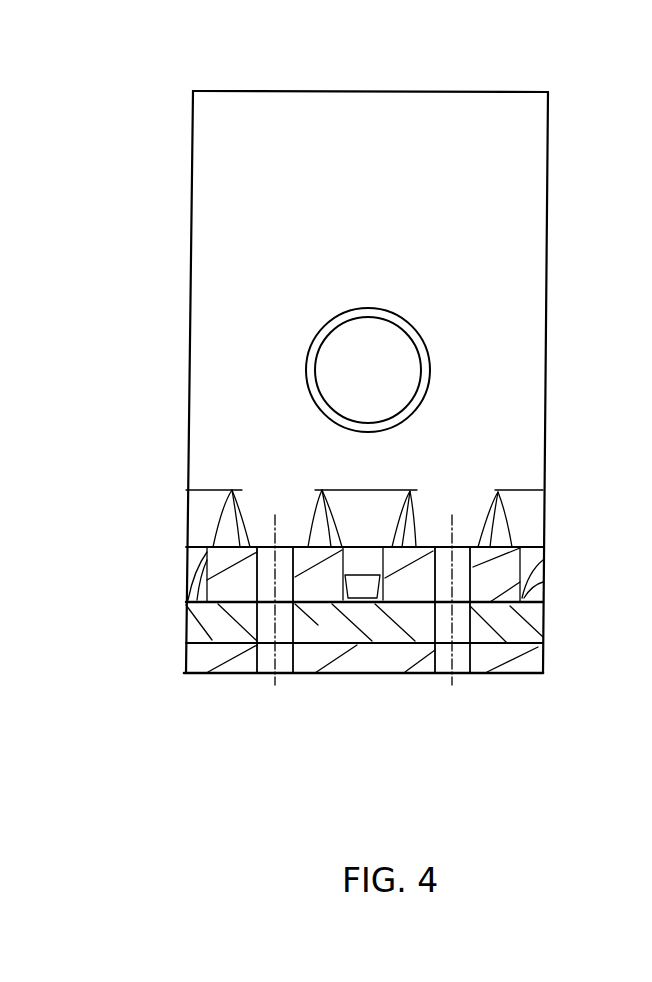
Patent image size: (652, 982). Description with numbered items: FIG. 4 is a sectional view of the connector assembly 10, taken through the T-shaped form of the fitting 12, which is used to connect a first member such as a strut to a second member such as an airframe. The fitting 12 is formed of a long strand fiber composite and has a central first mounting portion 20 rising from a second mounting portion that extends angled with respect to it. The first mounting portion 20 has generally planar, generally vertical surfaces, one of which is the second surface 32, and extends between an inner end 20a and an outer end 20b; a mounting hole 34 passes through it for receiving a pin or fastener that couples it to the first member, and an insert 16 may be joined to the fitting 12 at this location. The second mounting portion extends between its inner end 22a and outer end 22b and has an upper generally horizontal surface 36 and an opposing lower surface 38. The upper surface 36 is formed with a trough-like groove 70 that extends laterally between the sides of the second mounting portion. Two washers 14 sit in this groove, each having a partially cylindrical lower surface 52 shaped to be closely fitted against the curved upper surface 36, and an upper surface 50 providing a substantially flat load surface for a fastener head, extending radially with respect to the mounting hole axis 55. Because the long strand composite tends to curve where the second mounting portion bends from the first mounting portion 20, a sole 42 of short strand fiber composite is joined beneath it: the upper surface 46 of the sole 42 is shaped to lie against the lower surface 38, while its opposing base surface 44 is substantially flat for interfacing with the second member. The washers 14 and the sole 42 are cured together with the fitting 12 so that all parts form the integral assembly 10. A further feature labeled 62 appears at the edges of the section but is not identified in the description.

The connector assembly 10 is at (113, 306).
The fitting 12 is at (170, 417).
The washer 14 is at (298, 509).
The insert 16 is at (394, 306).
The first mounting portion 20 is at (178, 132).
The inner end 20a is at (192, 264).
The outer end 20b is at (368, 90).
The inner end 22a is at (185, 625).
The outer end 22b is at (544, 628).
The second surface 32 is at (237, 213).
The mounting hole 34 is at (327, 335).
The upper surface 36 is at (545, 577).
The lower surface 38 is at (413, 673).
The sole 42 is at (372, 676).
The base surface 44 is at (497, 673).
The upper surface 46 is at (222, 636).
The washer upper surface 50 is at (252, 515).
The washer lower surface 52 is at (328, 618).
The mounting hole axis 55 is at (453, 543).
The edge fins 62 is at (203, 565).
The groove 70 is at (362, 568).